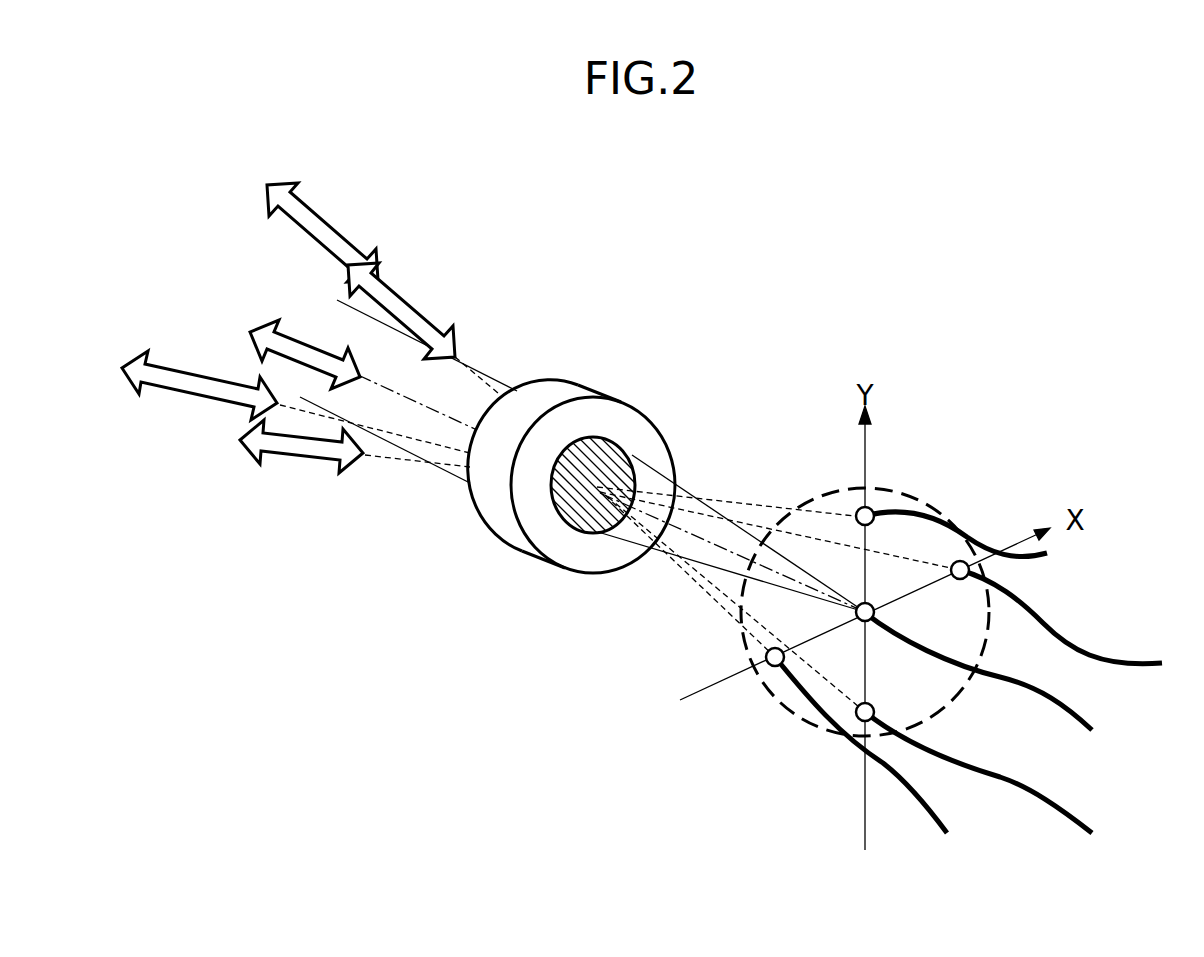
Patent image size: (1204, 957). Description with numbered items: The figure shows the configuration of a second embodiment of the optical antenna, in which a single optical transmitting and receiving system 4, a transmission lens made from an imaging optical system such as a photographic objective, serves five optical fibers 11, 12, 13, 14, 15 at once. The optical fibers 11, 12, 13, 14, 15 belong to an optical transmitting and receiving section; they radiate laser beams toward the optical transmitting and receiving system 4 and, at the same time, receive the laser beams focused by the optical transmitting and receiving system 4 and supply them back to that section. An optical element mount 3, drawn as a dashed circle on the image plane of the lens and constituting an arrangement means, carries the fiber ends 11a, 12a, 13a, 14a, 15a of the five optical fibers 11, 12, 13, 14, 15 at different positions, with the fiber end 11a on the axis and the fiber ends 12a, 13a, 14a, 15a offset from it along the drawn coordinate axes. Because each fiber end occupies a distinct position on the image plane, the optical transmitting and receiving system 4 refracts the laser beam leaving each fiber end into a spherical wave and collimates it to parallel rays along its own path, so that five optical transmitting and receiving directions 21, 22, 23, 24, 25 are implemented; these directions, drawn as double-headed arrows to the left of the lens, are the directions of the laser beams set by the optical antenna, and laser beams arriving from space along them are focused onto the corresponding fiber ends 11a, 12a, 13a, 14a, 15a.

The optical element mount 3 is at (779, 732).
The optical transmitting and receiving system 4 is at (636, 420).
The optical fiber 11 is at (1020, 676).
The optical fiber 12 is at (1118, 660).
The optical fiber 13 is at (930, 816).
The optical fiber 14 is at (991, 546).
The optical fiber 15 is at (1033, 794).
The fiber end 11a is at (858, 603).
The fiber end 12a is at (959, 581).
The fiber end 13a is at (765, 657).
The fiber end 14a is at (859, 506).
The fiber end 15a is at (877, 703).
The optical transmitting and receiving direction 21 is at (262, 320).
The optical transmitting and receiving direction 22 is at (153, 392).
The optical transmitting and receiving direction 23 is at (418, 312).
The optical transmitting and receiving direction 24 is at (282, 462).
The optical transmitting and receiving direction 25 is at (290, 178).